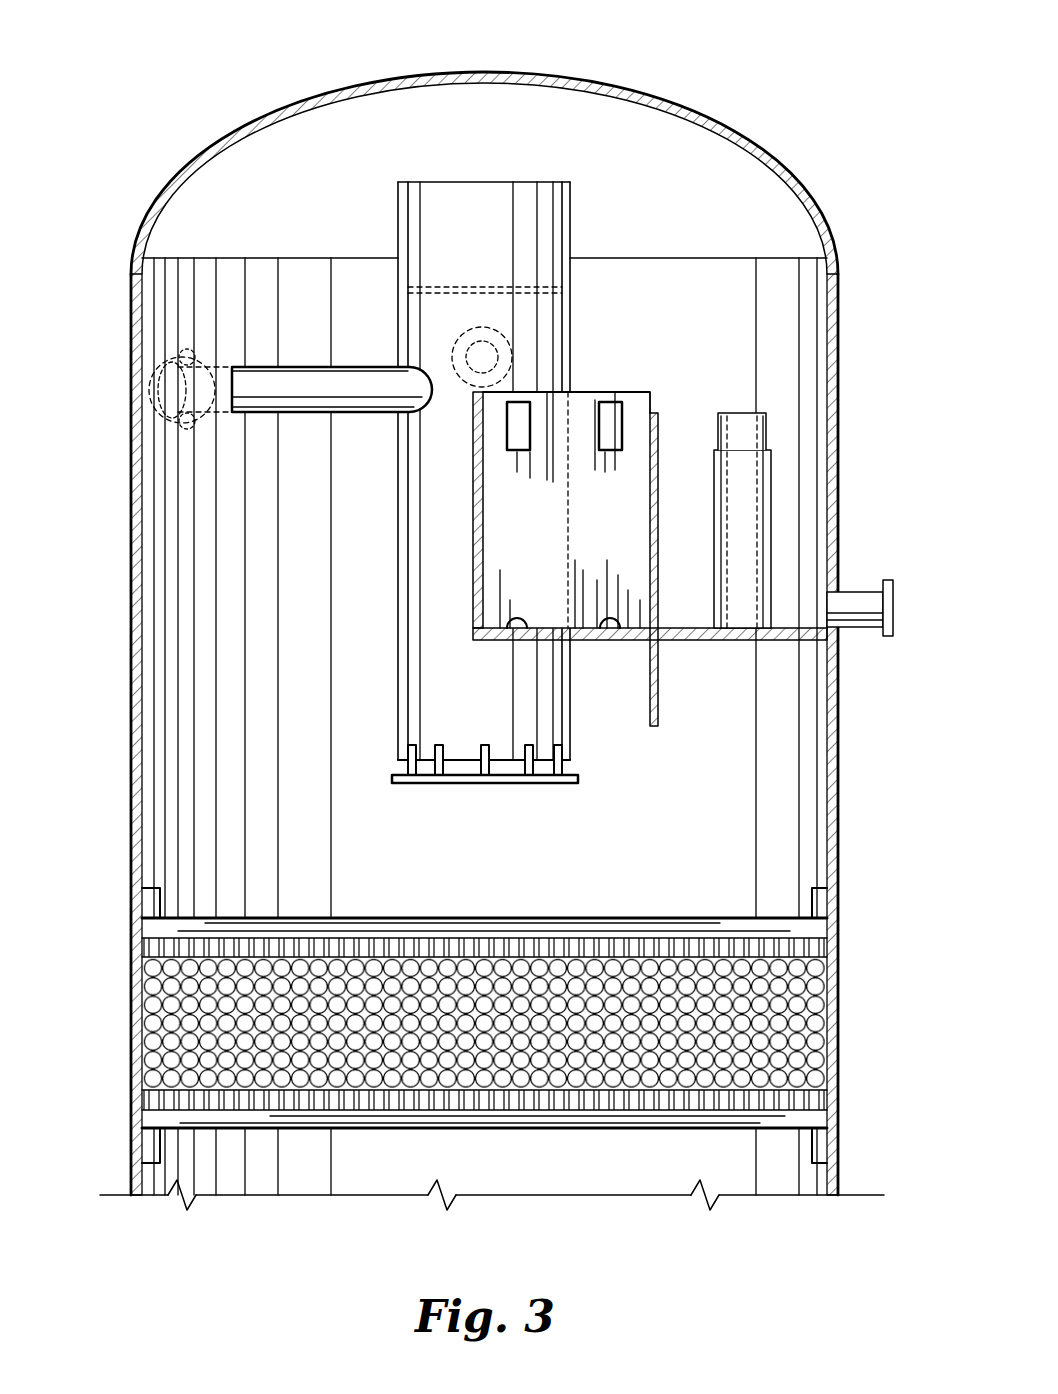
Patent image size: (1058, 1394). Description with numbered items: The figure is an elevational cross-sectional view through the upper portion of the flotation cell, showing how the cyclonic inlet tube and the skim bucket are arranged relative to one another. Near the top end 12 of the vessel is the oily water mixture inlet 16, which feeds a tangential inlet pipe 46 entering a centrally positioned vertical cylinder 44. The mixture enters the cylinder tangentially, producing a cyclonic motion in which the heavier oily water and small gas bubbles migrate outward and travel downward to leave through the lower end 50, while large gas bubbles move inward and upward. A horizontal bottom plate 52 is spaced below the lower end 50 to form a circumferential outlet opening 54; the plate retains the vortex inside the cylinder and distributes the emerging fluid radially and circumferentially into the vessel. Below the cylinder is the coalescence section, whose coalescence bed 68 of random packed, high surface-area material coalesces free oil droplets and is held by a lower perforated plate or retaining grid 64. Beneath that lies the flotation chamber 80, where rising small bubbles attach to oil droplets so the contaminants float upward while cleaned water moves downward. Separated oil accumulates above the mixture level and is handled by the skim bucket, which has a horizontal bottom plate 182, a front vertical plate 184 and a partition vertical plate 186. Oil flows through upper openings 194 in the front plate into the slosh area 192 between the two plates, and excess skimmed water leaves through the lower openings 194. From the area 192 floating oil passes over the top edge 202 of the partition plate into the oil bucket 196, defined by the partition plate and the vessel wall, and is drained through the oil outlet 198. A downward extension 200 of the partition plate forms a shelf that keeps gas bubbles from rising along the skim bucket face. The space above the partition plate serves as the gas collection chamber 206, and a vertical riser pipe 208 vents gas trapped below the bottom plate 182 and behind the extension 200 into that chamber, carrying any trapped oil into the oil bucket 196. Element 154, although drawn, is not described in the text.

The top end 12 is at (540, 74).
The oily water mixture inlet 16 is at (127, 435).
The vertical cylinder 44 is at (571, 311).
The tangential inlet pipe 46 is at (323, 381).
The lower end 50 is at (427, 763).
The horizontal bottom plate 52 is at (508, 783).
The circumferential outlet opening 54 is at (553, 783).
The lower perforated plate or retaining grid 64 is at (598, 1133).
The coalescence bed 68 is at (800, 1007).
The flotation chamber 80 is at (737, 1172).
The drain openings 154 is at (601, 640).
The horizontal bottom plate 182 is at (633, 643).
The front vertical plate 184 is at (485, 542).
The partition vertical plate 186 is at (659, 461).
The area 192 is at (629, 540).
The openings 194 is at (608, 412).
The oil bucket 196 is at (708, 526).
The oil outlet 198 is at (861, 600).
The downward extension 200 is at (660, 715).
The top edge 202 is at (656, 417).
The gas collection chamber 206 is at (262, 208).
The vertical riser pipe 208 is at (772, 507).